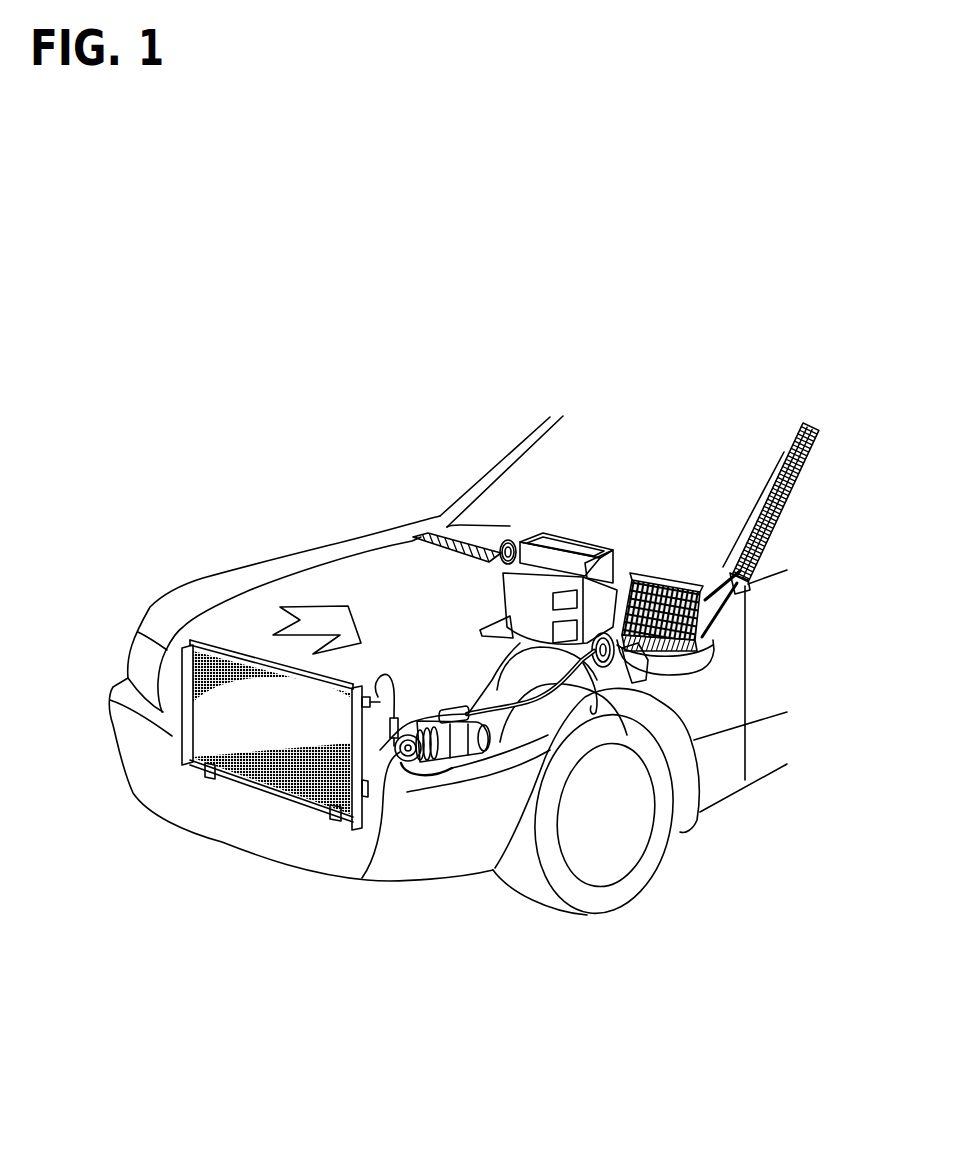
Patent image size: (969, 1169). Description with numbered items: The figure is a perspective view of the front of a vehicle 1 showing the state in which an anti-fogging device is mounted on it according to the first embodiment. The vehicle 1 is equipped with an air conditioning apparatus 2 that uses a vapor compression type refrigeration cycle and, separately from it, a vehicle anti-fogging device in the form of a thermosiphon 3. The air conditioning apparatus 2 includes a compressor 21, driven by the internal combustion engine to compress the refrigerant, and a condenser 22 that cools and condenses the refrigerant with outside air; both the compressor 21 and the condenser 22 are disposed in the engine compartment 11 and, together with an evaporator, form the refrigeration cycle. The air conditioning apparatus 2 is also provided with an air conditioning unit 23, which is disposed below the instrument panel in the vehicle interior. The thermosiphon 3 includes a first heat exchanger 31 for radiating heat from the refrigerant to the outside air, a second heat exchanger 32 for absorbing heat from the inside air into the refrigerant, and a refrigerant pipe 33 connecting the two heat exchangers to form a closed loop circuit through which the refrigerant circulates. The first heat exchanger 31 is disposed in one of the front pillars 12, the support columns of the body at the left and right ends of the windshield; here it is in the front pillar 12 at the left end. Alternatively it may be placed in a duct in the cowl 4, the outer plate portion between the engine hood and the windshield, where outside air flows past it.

The vehicle 1 is at (341, 500).
The engine compartment 11 is at (247, 628).
The front pillar 12 is at (507, 453).
The cowl 4 is at (437, 540).
The air conditioning apparatus 2 is at (388, 818).
The compressor 21 is at (380, 775).
The condenser 22 is at (287, 781).
The air conditioning unit 23 is at (510, 645).
The thermosiphon 3 is at (741, 562).
The first heat exchanger 31 is at (757, 510).
The second heat exchanger 32 is at (705, 642).
The refrigerant pipe 33 is at (712, 600).